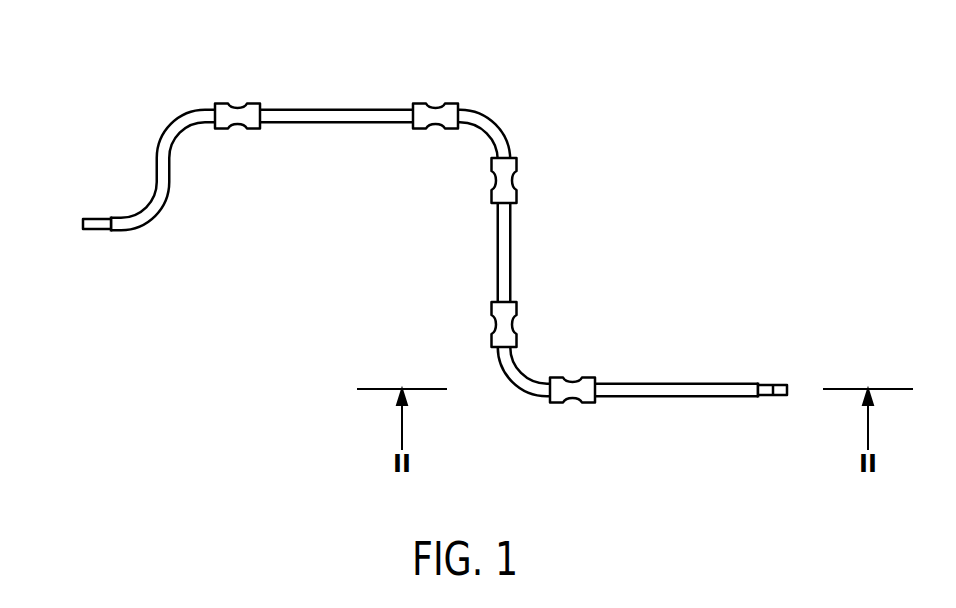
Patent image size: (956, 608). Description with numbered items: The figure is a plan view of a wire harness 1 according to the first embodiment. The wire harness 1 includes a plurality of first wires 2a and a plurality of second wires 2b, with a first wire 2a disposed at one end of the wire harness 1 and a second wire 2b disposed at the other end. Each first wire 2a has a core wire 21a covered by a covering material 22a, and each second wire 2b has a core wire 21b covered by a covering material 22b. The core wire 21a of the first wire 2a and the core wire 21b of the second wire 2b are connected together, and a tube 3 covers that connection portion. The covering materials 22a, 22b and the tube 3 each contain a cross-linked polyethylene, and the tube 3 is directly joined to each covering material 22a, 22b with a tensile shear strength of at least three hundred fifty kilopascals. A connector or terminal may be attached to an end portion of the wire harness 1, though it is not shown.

The wire harness 1 is at (431, 249).
The first wire 2a is at (339, 249).
The second wire 2b is at (508, 303).
The tube 3 is at (250, 110).
The core wire 21a is at (100, 226).
The core wire 21b is at (794, 327).
The covering material 22a is at (164, 120).
The covering material 22b is at (675, 329).